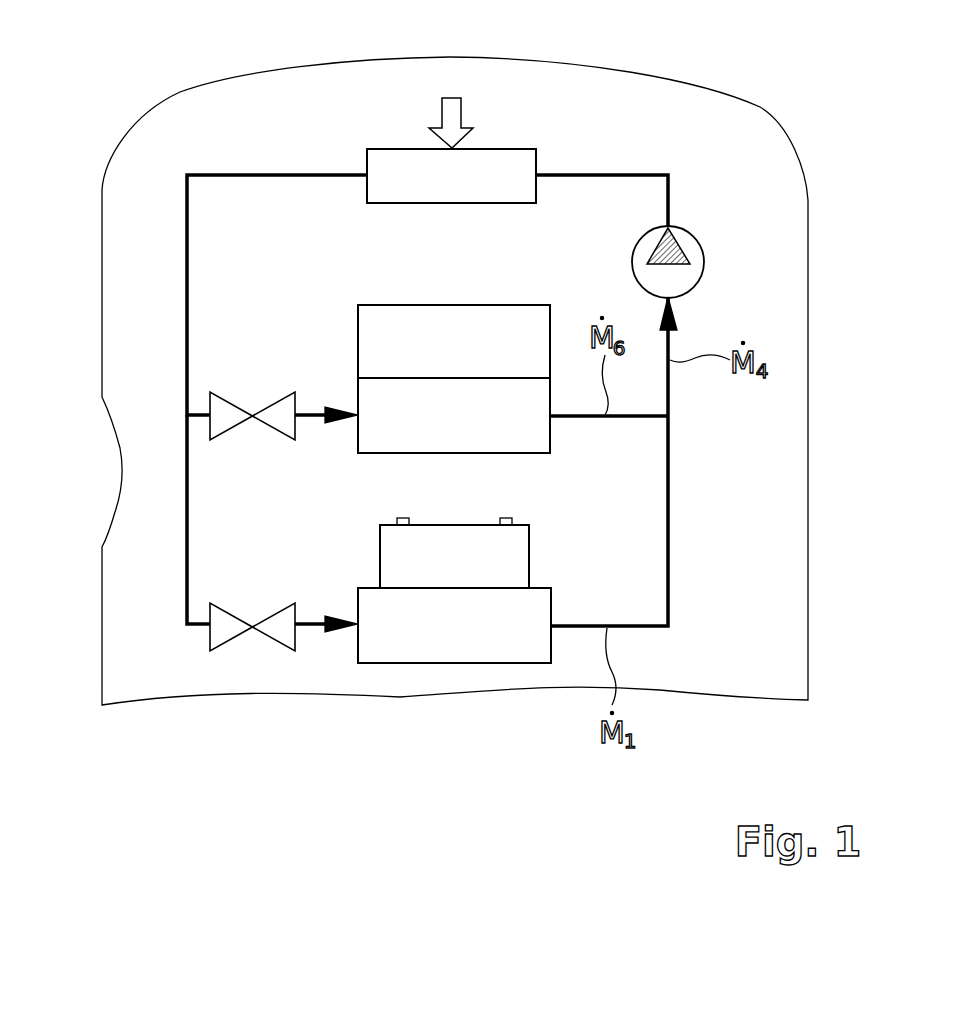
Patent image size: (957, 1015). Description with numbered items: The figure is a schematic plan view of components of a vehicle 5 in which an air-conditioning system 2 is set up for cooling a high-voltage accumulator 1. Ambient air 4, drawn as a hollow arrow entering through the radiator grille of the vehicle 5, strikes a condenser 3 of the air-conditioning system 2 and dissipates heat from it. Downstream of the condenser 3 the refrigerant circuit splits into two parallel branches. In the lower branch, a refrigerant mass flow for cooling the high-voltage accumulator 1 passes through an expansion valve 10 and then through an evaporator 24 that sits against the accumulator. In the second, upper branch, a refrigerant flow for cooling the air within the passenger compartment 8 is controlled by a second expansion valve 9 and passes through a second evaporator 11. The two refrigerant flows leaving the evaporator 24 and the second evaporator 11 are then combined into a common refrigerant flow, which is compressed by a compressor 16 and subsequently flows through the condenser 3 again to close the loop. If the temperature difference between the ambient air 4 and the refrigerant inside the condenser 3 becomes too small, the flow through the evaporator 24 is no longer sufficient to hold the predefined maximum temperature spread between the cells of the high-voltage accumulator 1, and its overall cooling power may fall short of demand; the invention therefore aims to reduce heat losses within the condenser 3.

The high-voltage accumulator 1 is at (380, 557).
The air-conditioning system 2 is at (205, 152).
The condenser 3 is at (517, 148).
The ambient air 4 is at (452, 108).
The vehicle 5 is at (808, 262).
The passenger compartment 8 is at (358, 328).
The second expansion valve 9 is at (223, 392).
The expansion valve 10 is at (232, 608).
The second evaporator 11 is at (358, 395).
The compressor 16 is at (687, 228).
The evaporator 24 is at (498, 663).